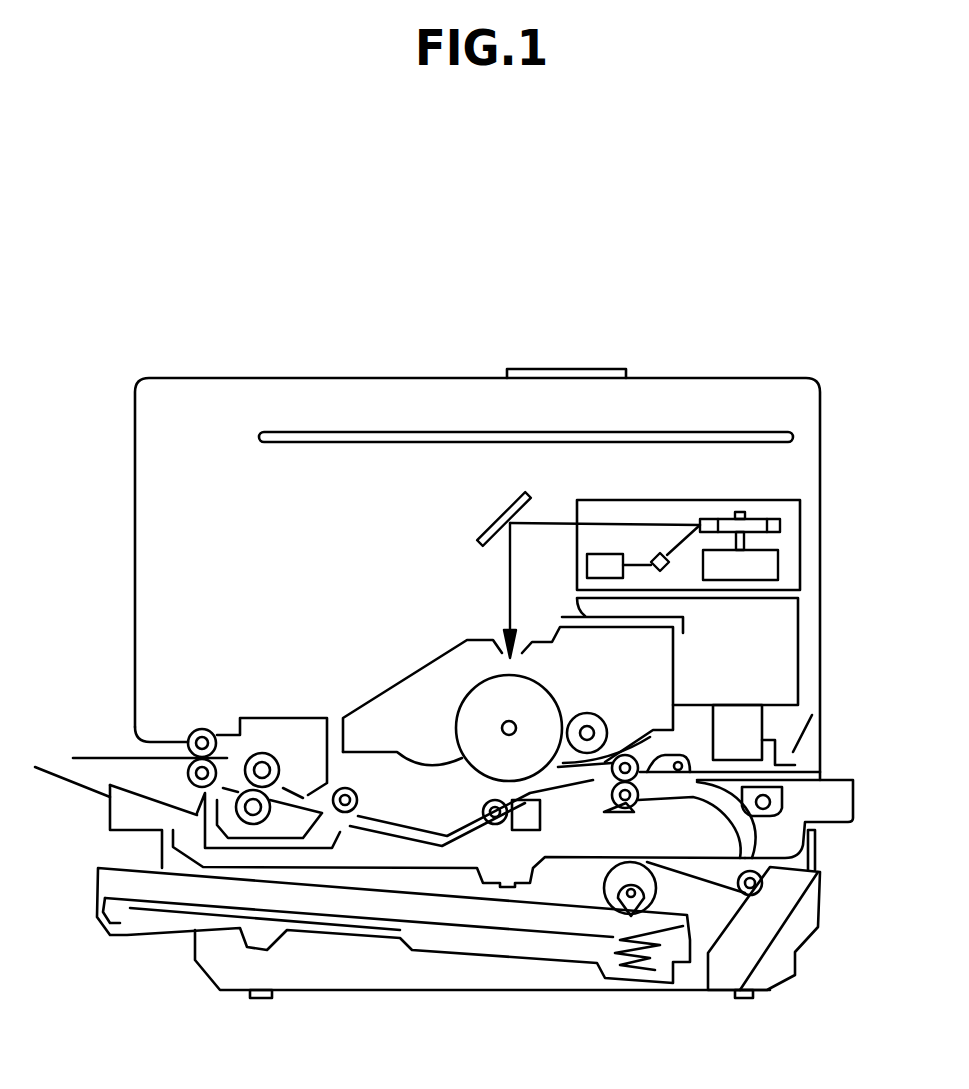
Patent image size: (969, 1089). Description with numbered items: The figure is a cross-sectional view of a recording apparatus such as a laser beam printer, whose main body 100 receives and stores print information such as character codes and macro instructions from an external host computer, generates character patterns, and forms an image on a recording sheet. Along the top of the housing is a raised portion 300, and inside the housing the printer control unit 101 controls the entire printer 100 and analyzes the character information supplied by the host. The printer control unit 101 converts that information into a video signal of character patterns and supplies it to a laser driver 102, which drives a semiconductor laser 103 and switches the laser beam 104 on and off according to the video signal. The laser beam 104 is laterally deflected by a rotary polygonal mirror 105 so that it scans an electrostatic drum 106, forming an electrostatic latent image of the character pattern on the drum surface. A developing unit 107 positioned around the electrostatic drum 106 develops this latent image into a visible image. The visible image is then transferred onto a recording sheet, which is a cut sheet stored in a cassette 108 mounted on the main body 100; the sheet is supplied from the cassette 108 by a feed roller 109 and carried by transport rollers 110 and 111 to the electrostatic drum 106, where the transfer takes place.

The main body 100 is at (708, 365).
The top cover protrusion 300 is at (587, 368).
The printer control unit 101 is at (795, 436).
The laser driver 102 is at (587, 568).
The semiconductor laser 103 is at (668, 567).
The laser beam 104 is at (667, 523).
The rotary polygonal mirror 105 is at (780, 526).
The electrostatic drum 106 is at (477, 690).
The developing unit 107 is at (382, 715).
The cassette 108 is at (97, 880).
The feed roller 109 is at (615, 902).
The transport roller 110 is at (750, 895).
The transport roller 111 is at (628, 808).